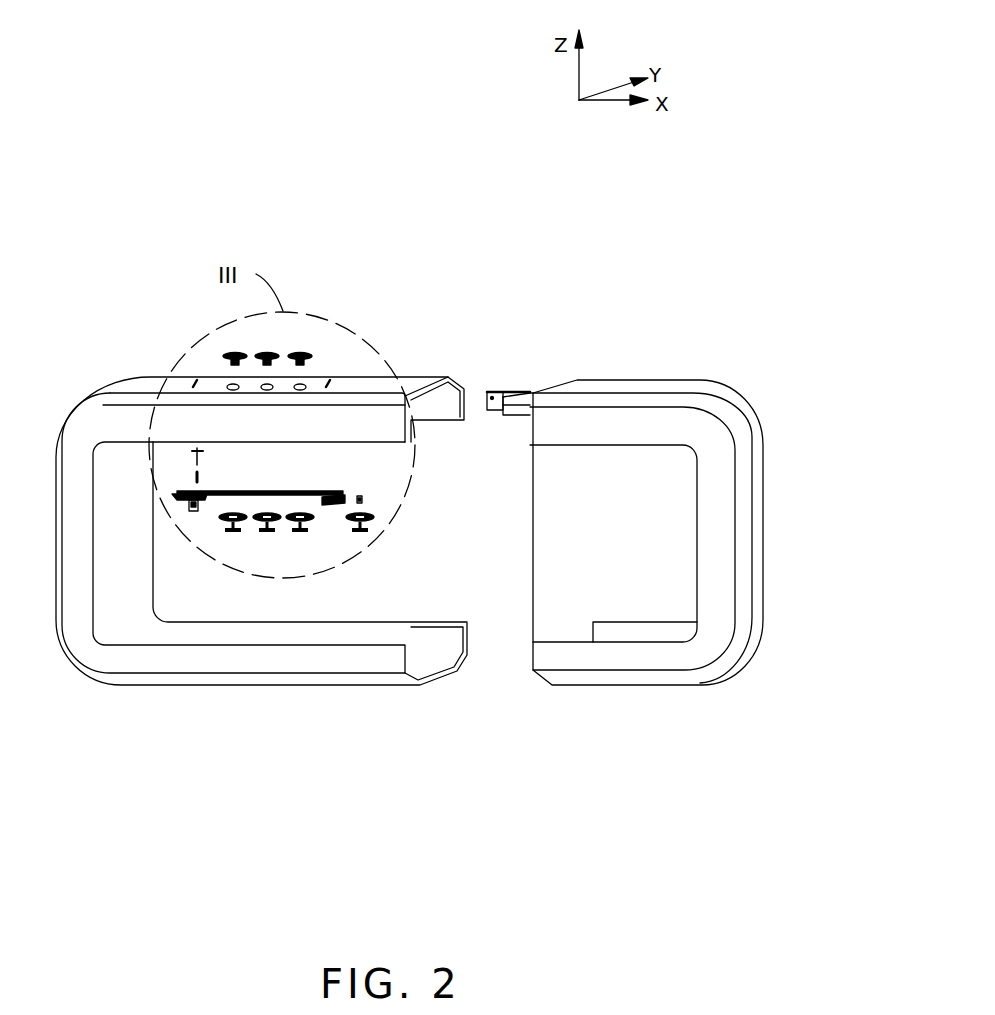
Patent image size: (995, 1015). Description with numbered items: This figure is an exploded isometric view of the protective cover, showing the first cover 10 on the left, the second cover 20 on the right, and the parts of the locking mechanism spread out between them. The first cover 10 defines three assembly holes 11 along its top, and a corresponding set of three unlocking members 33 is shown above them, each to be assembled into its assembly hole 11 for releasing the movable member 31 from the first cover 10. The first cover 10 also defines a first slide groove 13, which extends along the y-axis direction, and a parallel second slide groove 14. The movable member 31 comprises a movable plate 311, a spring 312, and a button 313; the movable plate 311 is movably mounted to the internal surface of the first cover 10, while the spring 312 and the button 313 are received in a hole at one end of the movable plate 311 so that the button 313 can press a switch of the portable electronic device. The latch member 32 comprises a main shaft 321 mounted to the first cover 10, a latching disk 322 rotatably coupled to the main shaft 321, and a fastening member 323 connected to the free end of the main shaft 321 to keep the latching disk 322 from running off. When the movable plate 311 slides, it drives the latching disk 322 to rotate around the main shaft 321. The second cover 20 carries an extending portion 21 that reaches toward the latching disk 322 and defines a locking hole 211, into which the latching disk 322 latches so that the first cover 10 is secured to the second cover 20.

The first cover 10 is at (135, 388).
The assembly hole 11 is at (307, 383).
The first slide groove 13 is at (194, 382).
The second slide groove 14 is at (329, 383).
The second cover 20 is at (688, 387).
The extending portion 21 is at (505, 390).
The locking hole 211 is at (488, 390).
The movable member 31 is at (211, 612).
The movable plate 311 is at (191, 512).
The spring 312 is at (176, 497).
The button 313 is at (193, 455).
The latch member 32 is at (361, 528).
The main shaft 321 is at (364, 500).
The latching disk 322 is at (373, 517).
The fastening member 323 is at (336, 541).
The unlocking member 33 is at (228, 347).